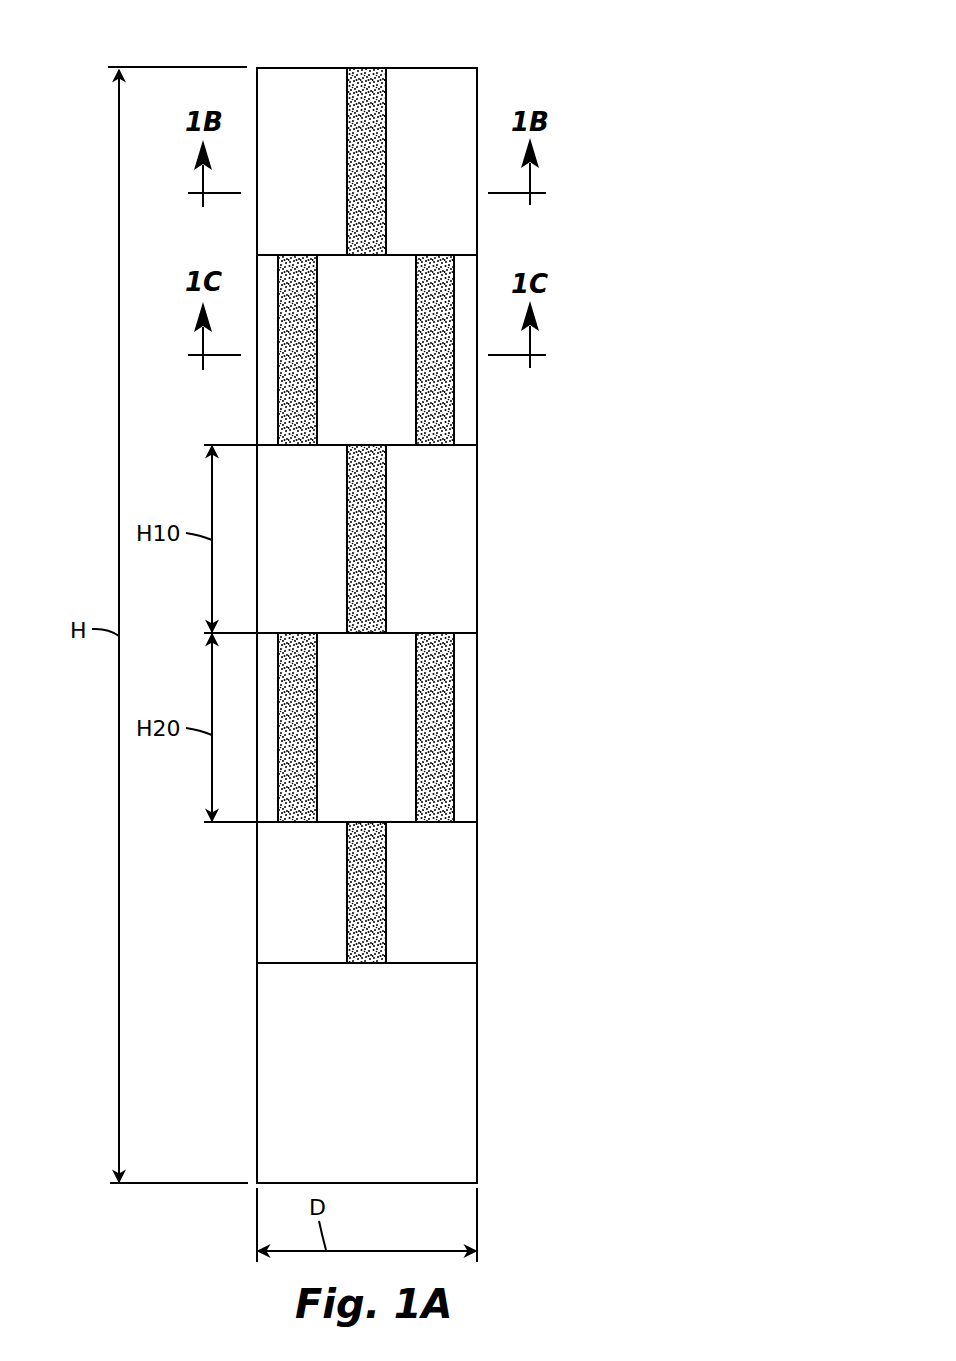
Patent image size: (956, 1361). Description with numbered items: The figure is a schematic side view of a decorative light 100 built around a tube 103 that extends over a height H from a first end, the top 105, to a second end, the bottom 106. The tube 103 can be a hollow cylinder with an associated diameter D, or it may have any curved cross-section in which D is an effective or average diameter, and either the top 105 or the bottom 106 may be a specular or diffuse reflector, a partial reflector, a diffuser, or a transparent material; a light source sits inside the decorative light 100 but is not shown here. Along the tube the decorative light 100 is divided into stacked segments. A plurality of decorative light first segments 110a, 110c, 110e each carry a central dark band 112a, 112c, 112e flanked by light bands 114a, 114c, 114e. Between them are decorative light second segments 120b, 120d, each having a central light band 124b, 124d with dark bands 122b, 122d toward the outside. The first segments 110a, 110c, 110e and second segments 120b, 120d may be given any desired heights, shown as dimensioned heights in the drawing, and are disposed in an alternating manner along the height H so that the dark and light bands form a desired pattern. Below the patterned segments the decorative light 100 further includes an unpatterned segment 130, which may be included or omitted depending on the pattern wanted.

The decorative light 100 is at (585, 55).
The tube 103 is at (244, 902).
The top 105 is at (283, 66).
The bottom 106 is at (393, 1188).
The decorative light first segment 110a is at (477, 78).
The decorative light first segment 110c is at (477, 536).
The decorative light first segment 110e is at (477, 891).
The central dark band 112a is at (367, 78).
The central dark band 112c is at (383, 497).
The central dark band 112e is at (368, 863).
The light band 114a is at (441, 80).
The light band 114c is at (465, 604).
The light band 114e is at (465, 939).
The decorative light second segment 120b is at (477, 433).
The decorative light second segment 120d is at (477, 731).
The dark band 122b is at (452, 403).
The dark band 122d is at (452, 669).
The central light band 124b is at (338, 408).
The central light band 124d is at (442, 785).
The unpatterned segment 130 is at (477, 1088).